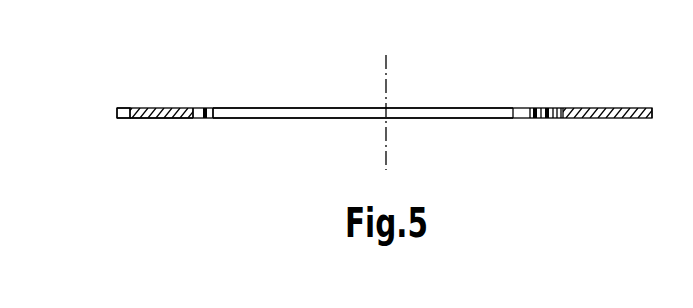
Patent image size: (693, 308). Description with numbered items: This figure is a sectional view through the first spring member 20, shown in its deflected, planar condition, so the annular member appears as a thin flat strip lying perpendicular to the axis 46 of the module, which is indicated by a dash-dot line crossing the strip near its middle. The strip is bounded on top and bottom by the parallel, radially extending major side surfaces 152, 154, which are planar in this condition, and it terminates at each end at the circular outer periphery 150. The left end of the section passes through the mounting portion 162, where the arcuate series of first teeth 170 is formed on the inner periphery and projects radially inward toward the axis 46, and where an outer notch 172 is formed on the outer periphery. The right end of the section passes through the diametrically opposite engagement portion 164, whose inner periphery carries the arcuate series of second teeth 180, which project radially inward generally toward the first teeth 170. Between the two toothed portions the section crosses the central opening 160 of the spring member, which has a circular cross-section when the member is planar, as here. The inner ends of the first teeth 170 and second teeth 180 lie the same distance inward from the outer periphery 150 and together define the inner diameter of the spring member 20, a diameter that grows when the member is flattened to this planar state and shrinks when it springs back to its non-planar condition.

The first spring member 20 is at (565, 70).
The axis 46 is at (385, 88).
The circular outer periphery 150 is at (117, 118).
The major side surface 152 is at (167, 110).
The major side surface 154 is at (167, 120).
The central opening 160 is at (445, 116).
The mounting portion 162 is at (203, 101).
The engagement portion 164 is at (612, 100).
The first teeth 170 is at (220, 119).
The outer notch 172 is at (121, 119).
The second teeth 180 is at (537, 118).